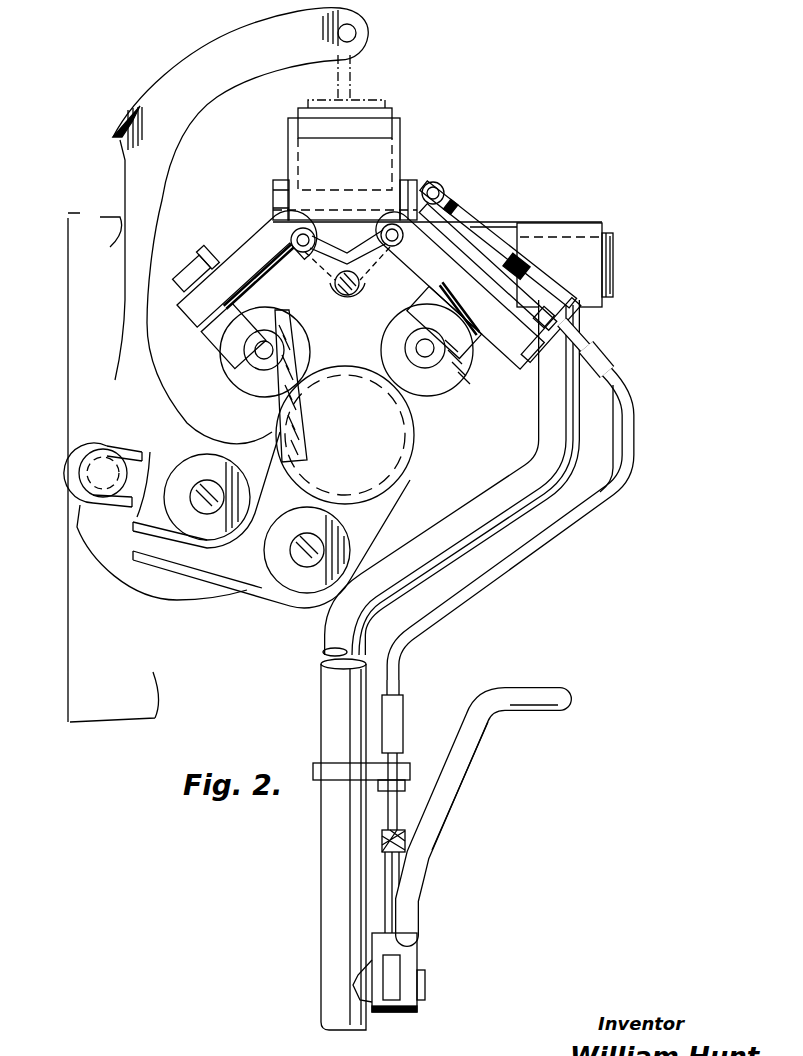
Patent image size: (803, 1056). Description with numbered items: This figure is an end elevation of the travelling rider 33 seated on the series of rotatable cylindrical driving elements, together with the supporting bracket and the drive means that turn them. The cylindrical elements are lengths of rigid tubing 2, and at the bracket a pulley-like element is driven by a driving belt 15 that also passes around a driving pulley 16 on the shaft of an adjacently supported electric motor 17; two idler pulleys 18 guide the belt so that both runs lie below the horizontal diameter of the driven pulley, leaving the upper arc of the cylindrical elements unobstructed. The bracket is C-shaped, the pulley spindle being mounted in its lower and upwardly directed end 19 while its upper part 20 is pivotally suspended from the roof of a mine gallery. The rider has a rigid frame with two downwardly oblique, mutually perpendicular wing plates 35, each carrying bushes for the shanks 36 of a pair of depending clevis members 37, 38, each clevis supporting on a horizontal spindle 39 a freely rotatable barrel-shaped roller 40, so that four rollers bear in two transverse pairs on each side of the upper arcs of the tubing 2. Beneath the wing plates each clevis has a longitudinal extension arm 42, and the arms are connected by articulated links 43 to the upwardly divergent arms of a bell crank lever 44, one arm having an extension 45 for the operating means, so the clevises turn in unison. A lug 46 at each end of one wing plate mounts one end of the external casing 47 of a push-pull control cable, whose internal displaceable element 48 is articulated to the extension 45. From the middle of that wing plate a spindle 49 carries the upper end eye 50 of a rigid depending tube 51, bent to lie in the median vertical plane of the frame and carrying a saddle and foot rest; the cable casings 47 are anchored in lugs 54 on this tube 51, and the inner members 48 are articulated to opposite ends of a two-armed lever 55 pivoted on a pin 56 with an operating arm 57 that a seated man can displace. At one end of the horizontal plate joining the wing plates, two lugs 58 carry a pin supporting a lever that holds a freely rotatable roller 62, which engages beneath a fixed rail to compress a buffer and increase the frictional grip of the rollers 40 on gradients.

The rigid tubing 2 is at (345, 435).
The driving belt 15 is at (140, 457).
The driving pulley 16 is at (104, 460).
The electric motor 17 is at (88, 227).
The idler pulleys 18 is at (276, 552).
The lower and upwardly directed ends of the brackets 19 is at (206, 490).
The upper parts of the brackets 20 is at (283, 56).
The travelling rider 33 is at (519, 218).
The wing plates 35 is at (272, 235).
The shanks 36 is at (195, 272).
The clevis member 37 is at (347, 242).
The clevis member 38 is at (222, 345).
The horizontal spindle 39 is at (268, 352).
The roller 40 is at (250, 382).
The longitudinal extension arm 42 is at (252, 314).
The articulated links 43 is at (284, 265).
The bell crank lever 44 is at (353, 300).
The extension 45 is at (452, 205).
The lug 46 is at (580, 314).
The external casing 47 is at (604, 366).
The internal displaceable element 48 is at (520, 245).
The spindle 49 is at (603, 277).
The upper end eye 50 is at (559, 265).
The depending tube 51 is at (482, 502).
The lugs 54 is at (408, 770).
The two-armed lever 55 is at (400, 970).
The pin 56 is at (426, 985).
The operating arm 57 is at (450, 778).
The lugs 58 is at (275, 192).
The roller 62 is at (345, 137).